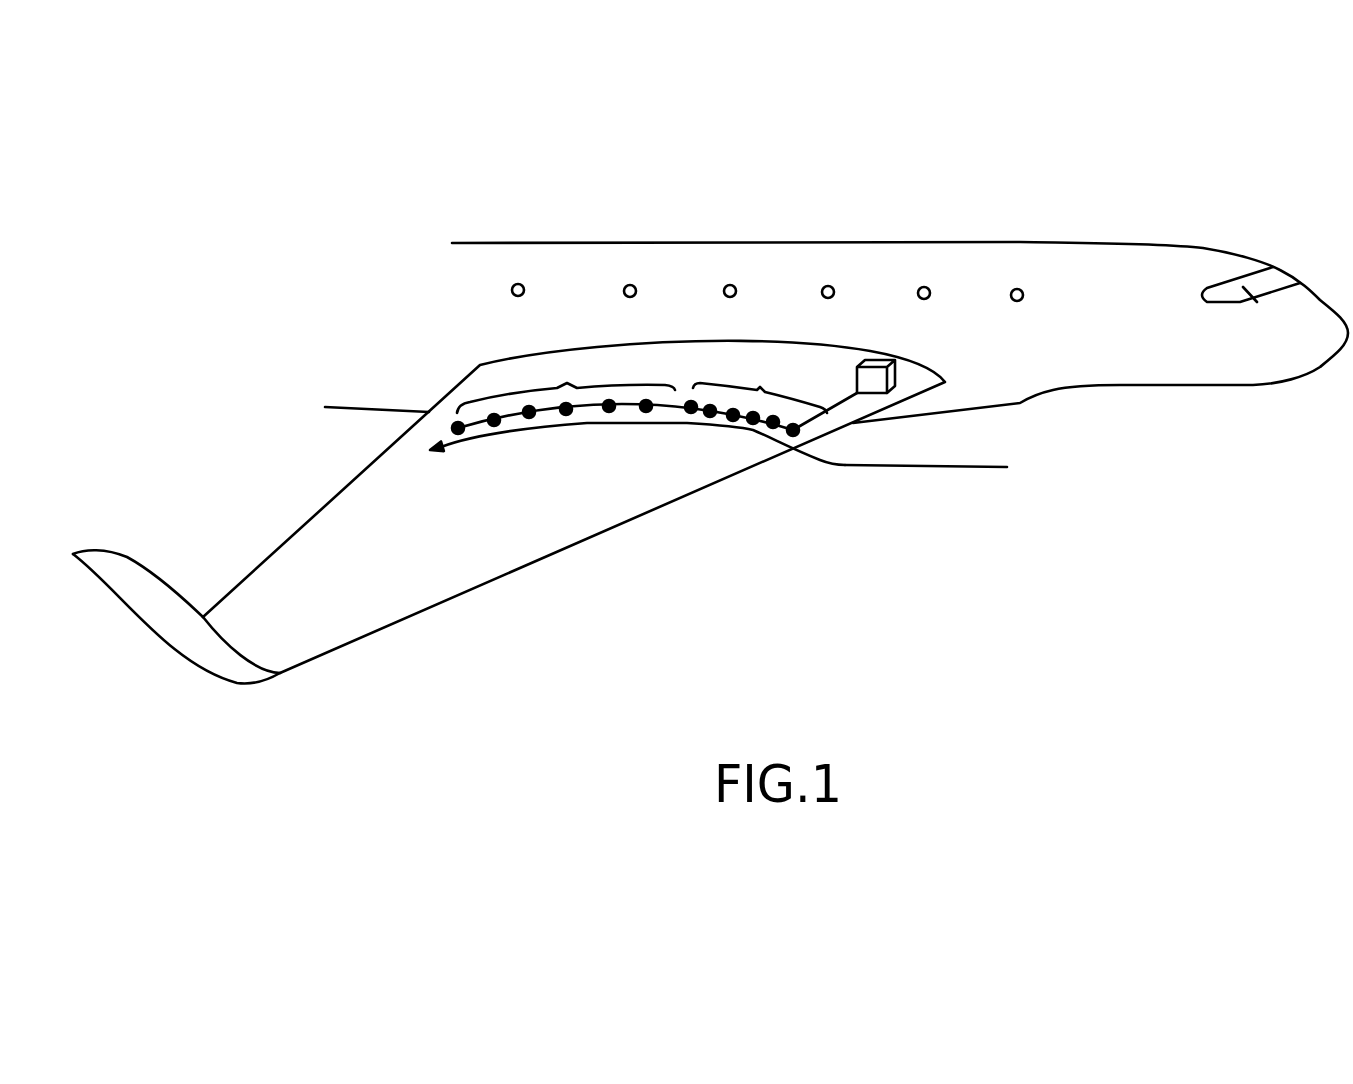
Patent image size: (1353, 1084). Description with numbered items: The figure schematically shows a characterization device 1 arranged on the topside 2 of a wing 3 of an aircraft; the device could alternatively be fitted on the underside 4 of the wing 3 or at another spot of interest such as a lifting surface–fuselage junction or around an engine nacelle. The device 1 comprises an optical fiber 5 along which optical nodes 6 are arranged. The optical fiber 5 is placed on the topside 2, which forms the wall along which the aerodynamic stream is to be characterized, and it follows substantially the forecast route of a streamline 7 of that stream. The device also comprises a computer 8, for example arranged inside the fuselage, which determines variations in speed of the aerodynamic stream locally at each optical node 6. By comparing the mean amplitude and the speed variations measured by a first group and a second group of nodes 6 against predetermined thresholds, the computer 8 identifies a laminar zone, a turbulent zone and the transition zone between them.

The characterization device 1 is at (356, 448).
The topside 2 is at (314, 563).
The wing 3 is at (162, 429).
The underside 4 is at (296, 602).
The optical fiber 5 is at (670, 412).
The optical nodes 6 is at (567, 413).
The streamline 7 is at (847, 465).
The computer 8 is at (895, 374).